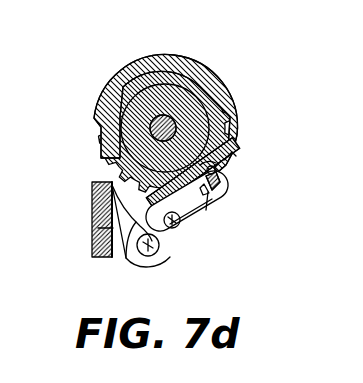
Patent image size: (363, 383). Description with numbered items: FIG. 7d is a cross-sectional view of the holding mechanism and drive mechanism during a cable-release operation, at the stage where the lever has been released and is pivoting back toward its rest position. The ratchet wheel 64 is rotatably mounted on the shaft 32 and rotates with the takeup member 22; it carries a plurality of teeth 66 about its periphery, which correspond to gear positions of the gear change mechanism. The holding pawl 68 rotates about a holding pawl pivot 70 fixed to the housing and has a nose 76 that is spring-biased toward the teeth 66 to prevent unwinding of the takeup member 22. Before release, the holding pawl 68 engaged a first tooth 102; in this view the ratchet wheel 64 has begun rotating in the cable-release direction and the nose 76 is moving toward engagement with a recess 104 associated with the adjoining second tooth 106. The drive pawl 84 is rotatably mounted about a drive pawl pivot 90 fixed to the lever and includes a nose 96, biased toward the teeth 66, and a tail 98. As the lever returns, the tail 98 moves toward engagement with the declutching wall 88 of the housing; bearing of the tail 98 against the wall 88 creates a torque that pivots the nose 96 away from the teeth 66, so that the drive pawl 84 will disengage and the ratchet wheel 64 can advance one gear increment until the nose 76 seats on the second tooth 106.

The takeup member 22 is at (151, 96).
The shaft 32 is at (188, 125).
The ratchet wheel 64 is at (117, 96).
The teeth 66 is at (96, 158).
The holding pawl 68 is at (226, 202).
The holding pawl pivot 70 is at (199, 217).
The nose 76 is at (222, 184).
The drive pawl 84 is at (172, 259).
The declutching wall 88 is at (75, 219).
The drive pawl pivot 90 is at (131, 259).
The nose 96 is at (190, 204).
The tail 98 is at (98, 230).
The first tooth 102 is at (218, 168).
The recess 104 is at (232, 158).
The second tooth 106 is at (222, 164).